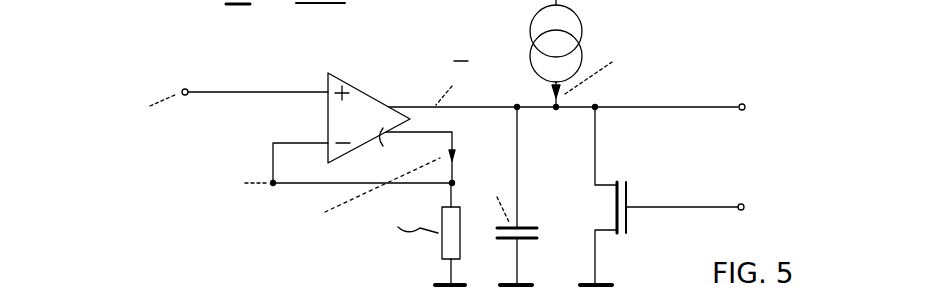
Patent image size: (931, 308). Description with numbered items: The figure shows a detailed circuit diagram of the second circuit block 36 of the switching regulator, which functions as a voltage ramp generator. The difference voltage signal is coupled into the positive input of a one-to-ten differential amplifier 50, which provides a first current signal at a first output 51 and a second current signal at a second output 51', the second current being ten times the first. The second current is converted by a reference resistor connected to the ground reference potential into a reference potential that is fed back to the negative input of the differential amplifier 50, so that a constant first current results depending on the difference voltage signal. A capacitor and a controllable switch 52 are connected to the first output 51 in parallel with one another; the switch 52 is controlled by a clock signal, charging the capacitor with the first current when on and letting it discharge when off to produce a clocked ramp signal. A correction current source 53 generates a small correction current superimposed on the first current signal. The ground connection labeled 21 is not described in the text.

The ground reference 21 is at (270, 0).
The second circuit block 36 is at (118, 181).
The differential amplifier 50 is at (368, 92).
The first output 51 is at (563, 88).
The second output 51' is at (447, 152).
The controllable switch 52 is at (630, 190).
The correction current source 53 is at (585, 18).